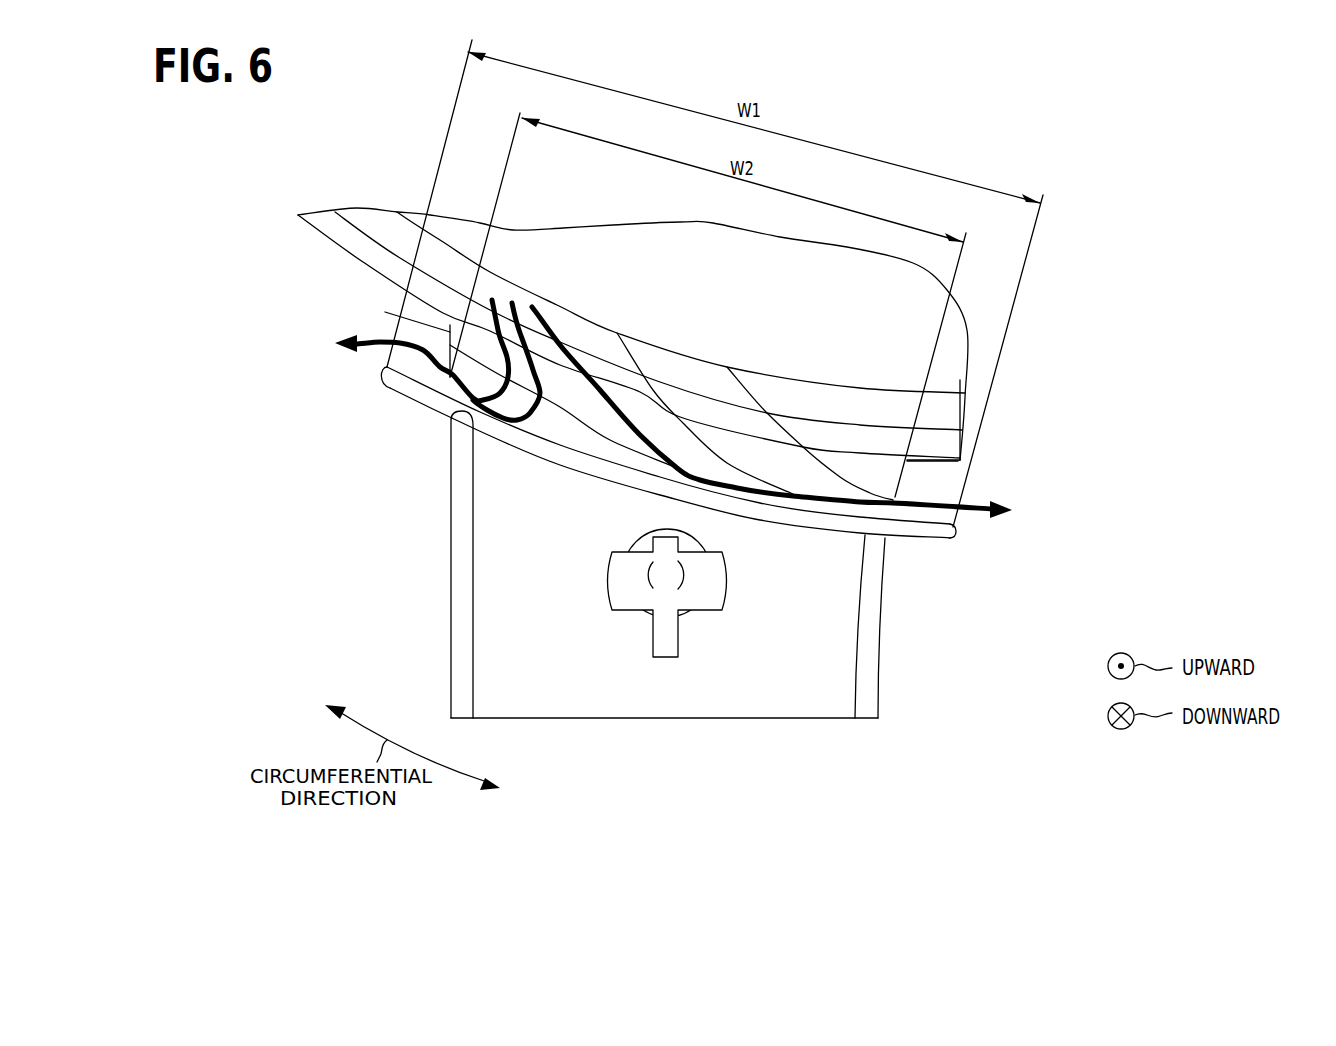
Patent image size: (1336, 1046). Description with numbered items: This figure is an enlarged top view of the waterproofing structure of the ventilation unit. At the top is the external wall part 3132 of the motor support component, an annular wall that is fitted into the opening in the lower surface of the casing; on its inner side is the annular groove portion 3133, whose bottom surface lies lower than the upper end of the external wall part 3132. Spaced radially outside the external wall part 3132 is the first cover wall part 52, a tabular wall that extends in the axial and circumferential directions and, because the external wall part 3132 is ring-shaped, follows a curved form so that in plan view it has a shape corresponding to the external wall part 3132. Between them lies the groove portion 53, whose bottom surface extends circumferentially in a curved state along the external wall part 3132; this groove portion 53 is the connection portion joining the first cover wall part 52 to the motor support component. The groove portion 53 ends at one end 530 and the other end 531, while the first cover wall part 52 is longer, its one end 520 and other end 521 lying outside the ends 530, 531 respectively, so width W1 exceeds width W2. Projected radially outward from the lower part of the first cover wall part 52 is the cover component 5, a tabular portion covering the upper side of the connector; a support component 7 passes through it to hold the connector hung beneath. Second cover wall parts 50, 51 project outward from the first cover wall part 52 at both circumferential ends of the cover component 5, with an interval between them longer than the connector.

The cover component 5 is at (563, 655).
The support component 7 is at (670, 583).
The second cover wall part 50 is at (865, 633).
The second cover wall part 51 is at (460, 560).
The first cover wall part 52 is at (673, 475).
The groove portion 53 is at (887, 473).
The one end of the first cover wall part 520 is at (953, 536).
The other end of the first cover wall part 521 is at (385, 369).
The one end of the groove portion 530 is at (903, 463).
The other end of the groove portion 531 is at (405, 316).
The external wall part 3132 is at (363, 258).
The annular groove portion 3133 is at (947, 410).